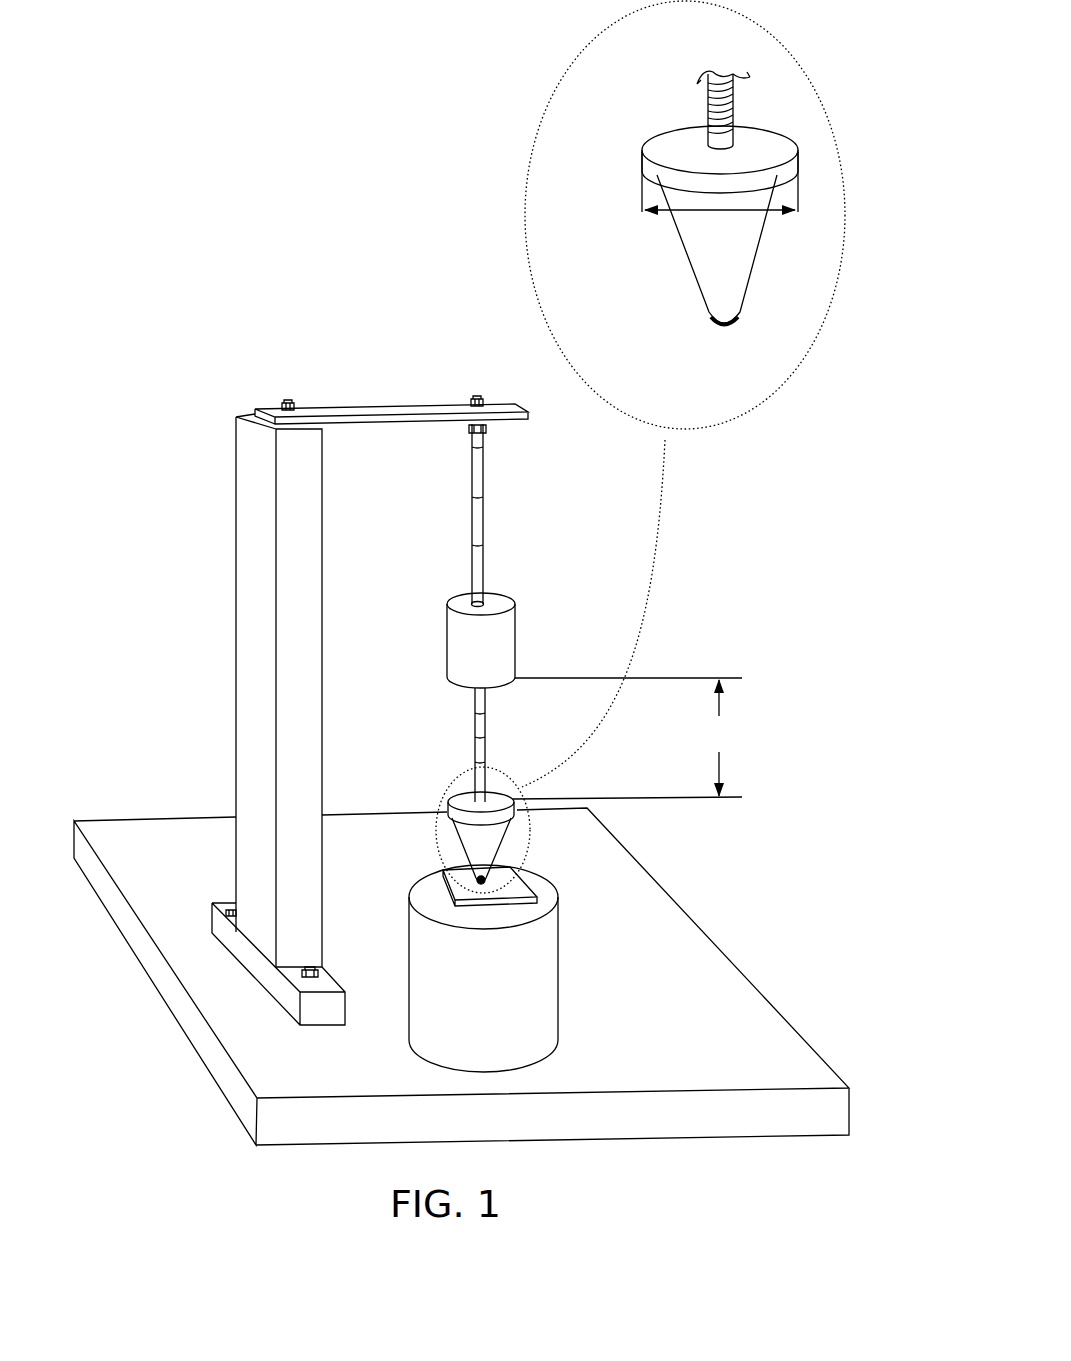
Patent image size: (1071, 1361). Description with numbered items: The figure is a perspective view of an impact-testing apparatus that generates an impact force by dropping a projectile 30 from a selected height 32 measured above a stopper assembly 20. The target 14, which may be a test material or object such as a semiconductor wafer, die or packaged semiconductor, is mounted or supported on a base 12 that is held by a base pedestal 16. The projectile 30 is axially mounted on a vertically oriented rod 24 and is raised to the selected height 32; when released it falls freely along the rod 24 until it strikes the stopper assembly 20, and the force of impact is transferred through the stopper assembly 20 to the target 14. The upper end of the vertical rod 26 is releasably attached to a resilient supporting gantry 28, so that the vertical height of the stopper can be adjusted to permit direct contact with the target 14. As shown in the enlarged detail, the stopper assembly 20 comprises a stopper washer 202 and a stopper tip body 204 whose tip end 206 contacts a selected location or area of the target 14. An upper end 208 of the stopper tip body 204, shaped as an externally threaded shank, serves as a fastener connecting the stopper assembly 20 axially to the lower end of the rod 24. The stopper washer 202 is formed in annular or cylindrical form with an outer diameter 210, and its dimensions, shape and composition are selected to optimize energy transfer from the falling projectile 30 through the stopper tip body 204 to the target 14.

The base 12 is at (743, 962).
The target 14 is at (508, 886).
The base pedestal 16 is at (500, 998).
The stopper assembly 20 is at (524, 237).
The vertically oriented rod 24 is at (488, 750).
The vertical rod 26 is at (495, 447).
The resilient supporting gantry 28 is at (360, 410).
The projectile 30 is at (517, 647).
The selected height 32 is at (627, 738).
The stopper washer 202 is at (463, 802).
The stopper tip body 204 is at (495, 838).
The tip end 206 is at (482, 881).
The upper end 208 is at (735, 108).
The outer diameter 210 is at (735, 211).